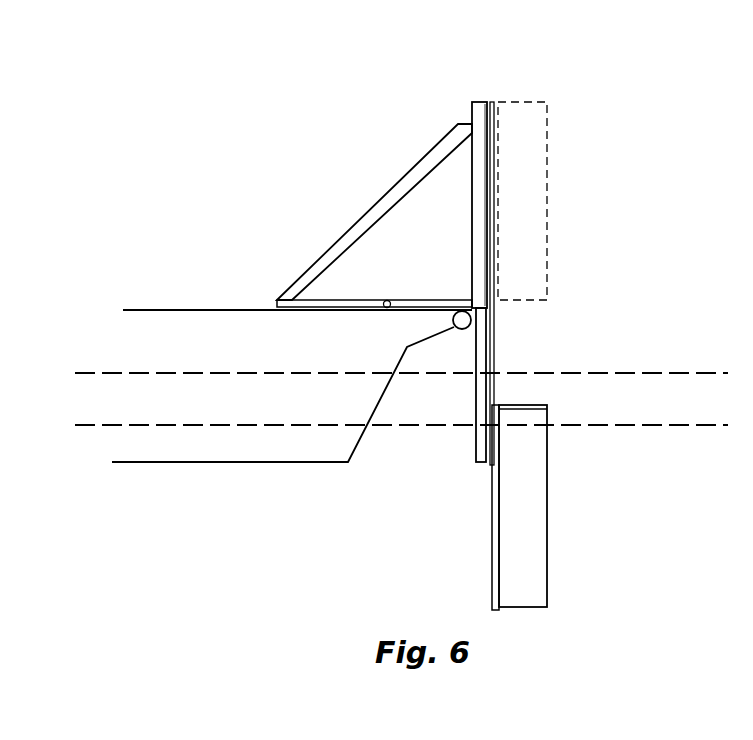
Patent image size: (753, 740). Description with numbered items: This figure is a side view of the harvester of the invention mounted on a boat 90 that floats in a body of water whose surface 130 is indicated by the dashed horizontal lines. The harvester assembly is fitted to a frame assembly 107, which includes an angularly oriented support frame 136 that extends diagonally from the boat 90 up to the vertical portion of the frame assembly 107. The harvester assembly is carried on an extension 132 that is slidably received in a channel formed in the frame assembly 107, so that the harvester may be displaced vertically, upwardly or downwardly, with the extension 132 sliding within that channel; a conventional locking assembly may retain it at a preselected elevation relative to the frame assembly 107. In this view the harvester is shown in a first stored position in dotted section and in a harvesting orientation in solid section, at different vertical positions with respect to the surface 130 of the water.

The boat 90 is at (175, 322).
The frame assembly 107 is at (476, 101).
The surface of the body of water 130 is at (88, 373).
The extension 132 is at (495, 341).
The angularly oriented support frame 136 is at (398, 183).